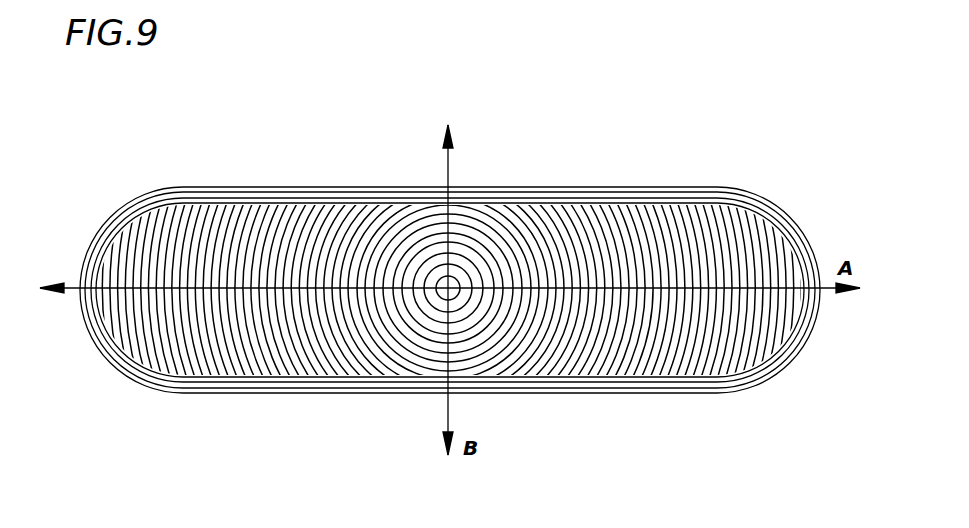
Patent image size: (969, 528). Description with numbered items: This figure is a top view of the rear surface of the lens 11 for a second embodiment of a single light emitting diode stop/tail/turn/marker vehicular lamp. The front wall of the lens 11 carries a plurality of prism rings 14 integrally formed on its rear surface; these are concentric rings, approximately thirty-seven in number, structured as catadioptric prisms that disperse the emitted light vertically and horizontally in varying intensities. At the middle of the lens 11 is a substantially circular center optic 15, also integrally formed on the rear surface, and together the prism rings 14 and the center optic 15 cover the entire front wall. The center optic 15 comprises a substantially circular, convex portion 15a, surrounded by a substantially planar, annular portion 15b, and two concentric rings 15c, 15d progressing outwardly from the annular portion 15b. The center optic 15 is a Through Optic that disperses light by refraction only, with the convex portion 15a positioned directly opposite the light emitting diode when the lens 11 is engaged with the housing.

The lens 11 is at (603, 187).
The prism rings 14 is at (325, 203).
The center optic 15 is at (448, 264).
The convex portion 15a is at (455, 295).
The annular portion 15b is at (427, 303).
The concentric ring 15c is at (427, 323).
The concentric ring 15d is at (438, 342).